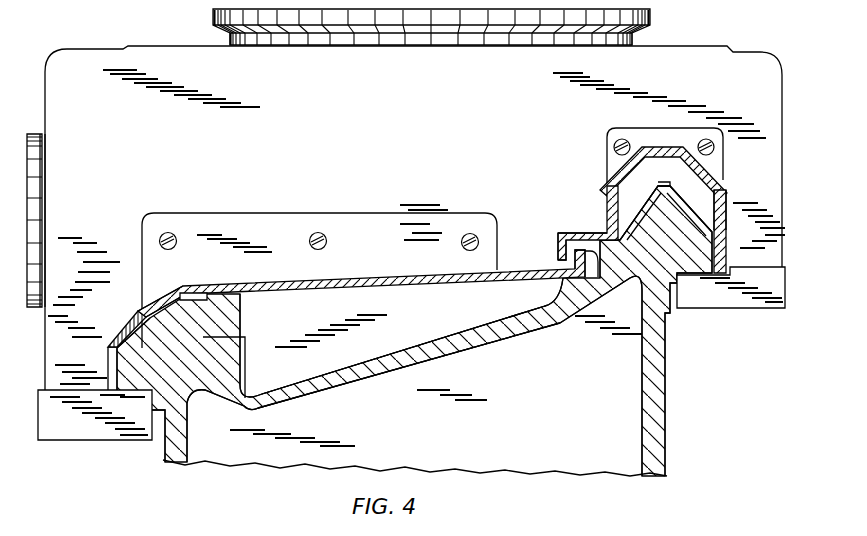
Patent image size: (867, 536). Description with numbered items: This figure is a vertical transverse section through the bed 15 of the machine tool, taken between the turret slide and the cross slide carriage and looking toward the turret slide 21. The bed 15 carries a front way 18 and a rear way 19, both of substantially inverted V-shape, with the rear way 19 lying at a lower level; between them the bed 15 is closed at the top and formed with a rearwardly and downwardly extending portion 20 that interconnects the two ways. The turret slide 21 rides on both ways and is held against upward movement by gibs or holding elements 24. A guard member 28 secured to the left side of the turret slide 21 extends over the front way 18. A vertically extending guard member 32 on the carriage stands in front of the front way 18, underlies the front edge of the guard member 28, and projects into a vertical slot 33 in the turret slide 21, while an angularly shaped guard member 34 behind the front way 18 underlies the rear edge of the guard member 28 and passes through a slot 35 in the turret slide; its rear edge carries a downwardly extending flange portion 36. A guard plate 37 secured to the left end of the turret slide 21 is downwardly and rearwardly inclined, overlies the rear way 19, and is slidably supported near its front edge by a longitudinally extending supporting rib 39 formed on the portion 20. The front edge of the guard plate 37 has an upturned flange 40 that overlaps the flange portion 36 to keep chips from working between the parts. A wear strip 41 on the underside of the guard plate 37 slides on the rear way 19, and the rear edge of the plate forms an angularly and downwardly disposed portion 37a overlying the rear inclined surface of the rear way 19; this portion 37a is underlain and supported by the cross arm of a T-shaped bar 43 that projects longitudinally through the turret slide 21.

The bed 15 is at (656, 406).
The front way 18 is at (634, 276).
The rear way 19 is at (247, 337).
The rearwardly and downwardly extending portion 20 is at (417, 351).
The turret slide 21 is at (162, 58).
The gibs or holding elements 24 is at (72, 422).
The guard member 28 is at (645, 150).
The vertically extending guard member 32 is at (727, 266).
The vertical slot 33 is at (727, 213).
The angularly shaped guard member 34 is at (557, 262).
The slot 35 is at (607, 216).
The downwardly extending flange portion 36 is at (559, 240).
The guard plate 37 is at (361, 274).
The angularly and downwardly disposed portion 37a is at (180, 291).
The supporting rib 39 is at (576, 282).
The upturned flange 40 is at (586, 253).
The wear strip 41 is at (205, 292).
The T-shaped bar 43 is at (122, 337).